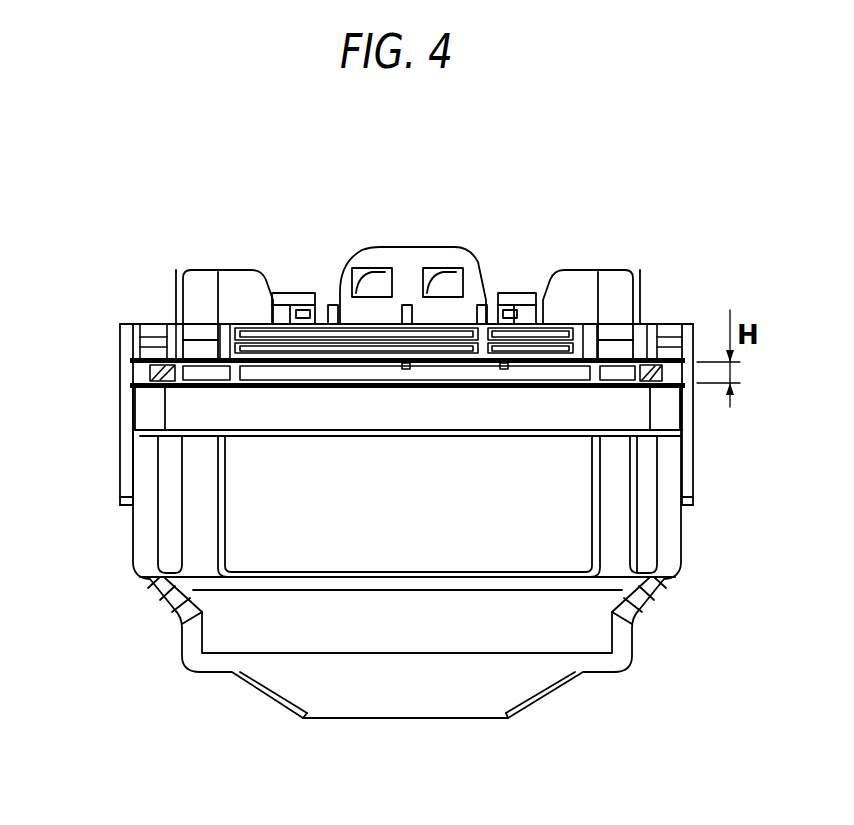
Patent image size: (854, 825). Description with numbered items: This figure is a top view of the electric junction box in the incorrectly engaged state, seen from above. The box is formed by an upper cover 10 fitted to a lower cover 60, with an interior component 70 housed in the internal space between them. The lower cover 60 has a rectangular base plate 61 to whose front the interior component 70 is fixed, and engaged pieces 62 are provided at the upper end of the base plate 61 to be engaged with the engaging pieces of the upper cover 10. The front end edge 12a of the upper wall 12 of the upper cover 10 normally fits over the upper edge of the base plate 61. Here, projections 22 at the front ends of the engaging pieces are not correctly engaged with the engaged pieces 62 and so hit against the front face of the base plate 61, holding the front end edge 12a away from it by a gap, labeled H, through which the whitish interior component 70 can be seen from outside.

The upper cover 10 is at (245, 702).
The upper wall 12 is at (337, 485).
The front end edge 12a is at (290, 377).
The projection 22 is at (170, 370).
The lower cover 60 is at (448, 234).
The base plate 61 is at (352, 362).
The engaged piece 62 is at (205, 340).
The interior component 70 is at (430, 375).